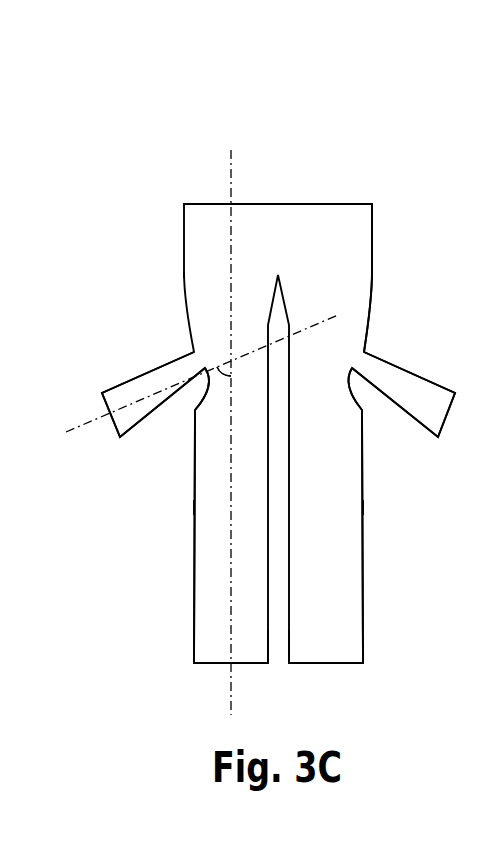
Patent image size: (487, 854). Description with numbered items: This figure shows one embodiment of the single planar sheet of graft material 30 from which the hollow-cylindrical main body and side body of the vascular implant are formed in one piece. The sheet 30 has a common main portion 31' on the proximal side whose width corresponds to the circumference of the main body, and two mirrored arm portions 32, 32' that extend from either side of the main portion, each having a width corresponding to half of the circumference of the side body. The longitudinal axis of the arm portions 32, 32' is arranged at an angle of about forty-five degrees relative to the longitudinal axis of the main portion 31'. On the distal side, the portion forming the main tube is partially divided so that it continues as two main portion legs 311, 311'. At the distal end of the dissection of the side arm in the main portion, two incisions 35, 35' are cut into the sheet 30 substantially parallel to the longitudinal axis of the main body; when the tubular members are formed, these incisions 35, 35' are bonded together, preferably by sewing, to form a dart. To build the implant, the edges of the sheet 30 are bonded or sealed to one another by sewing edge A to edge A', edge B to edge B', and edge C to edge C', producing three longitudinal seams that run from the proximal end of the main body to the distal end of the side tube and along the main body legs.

The single planar sheet of graft material 30 is at (358, 176).
The main portion 31' is at (367, 278).
The arm portion 32 is at (147, 379).
The arm portion 32' is at (409, 378).
The incision 35 is at (179, 419).
The incision 35' is at (379, 419).
The main portion leg 311 is at (194, 536).
The main portion leg 311' is at (368, 536).
The edge A is at (158, 280).
The edge A' is at (402, 280).
The edge B is at (167, 512).
The edge B' is at (394, 510).
The edge C is at (255, 677).
The edge C' is at (303, 677).